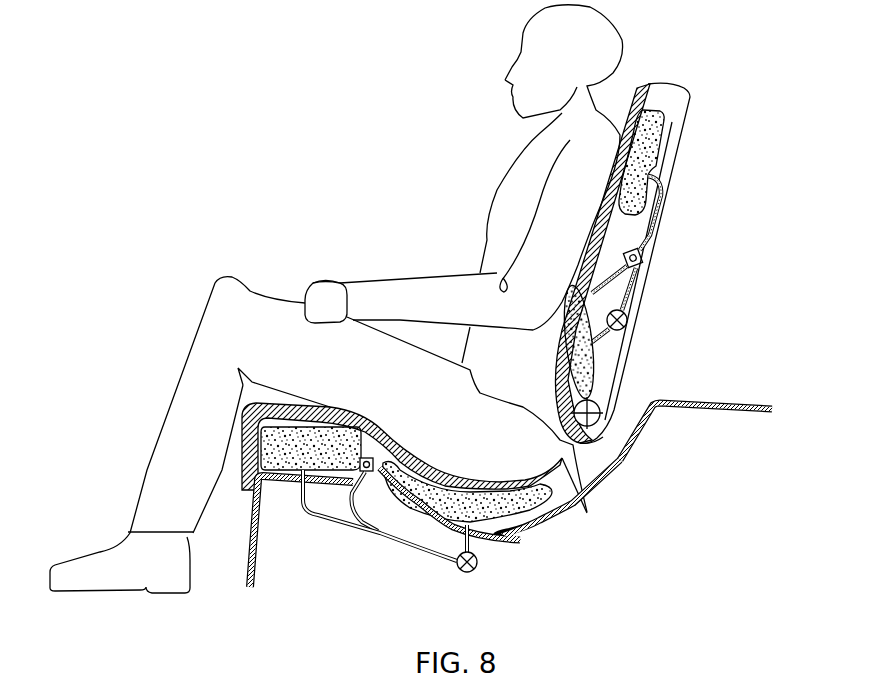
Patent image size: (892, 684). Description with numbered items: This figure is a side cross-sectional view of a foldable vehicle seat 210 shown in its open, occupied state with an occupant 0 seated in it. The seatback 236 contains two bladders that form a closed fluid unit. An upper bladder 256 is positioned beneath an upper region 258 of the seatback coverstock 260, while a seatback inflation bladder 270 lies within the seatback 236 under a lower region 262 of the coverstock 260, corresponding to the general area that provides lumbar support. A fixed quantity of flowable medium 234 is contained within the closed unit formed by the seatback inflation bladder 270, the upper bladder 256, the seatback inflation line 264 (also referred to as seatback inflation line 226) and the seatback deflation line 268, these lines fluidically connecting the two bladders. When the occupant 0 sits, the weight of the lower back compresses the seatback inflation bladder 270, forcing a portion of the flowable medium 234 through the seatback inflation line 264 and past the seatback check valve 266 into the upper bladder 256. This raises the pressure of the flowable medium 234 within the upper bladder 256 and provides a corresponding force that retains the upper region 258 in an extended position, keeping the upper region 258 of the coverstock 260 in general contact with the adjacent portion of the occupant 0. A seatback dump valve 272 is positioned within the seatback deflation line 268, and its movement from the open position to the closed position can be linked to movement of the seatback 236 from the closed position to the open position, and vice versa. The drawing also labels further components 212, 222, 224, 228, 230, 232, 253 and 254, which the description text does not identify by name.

The occupant 0 is at (436, 163).
The vehicle seat 210 is at (746, 161).
The seat cushion bladder 212 is at (562, 505).
The seat frame 222 is at (283, 474).
The seat pan 224 is at (512, 533).
The seatback inflation line 226 is at (360, 478).
The valve 228 is at (359, 466).
The conduit 230 is at (402, 547).
The pump 232 is at (470, 572).
The flowable medium 234 is at (566, 341).
The seatback 236 is at (672, 281).
The pivot 253 is at (600, 423).
The floor rail 254 is at (703, 409).
The upper bladder 256 is at (657, 146).
The upper region 258 is at (623, 107).
The seatback coverstock 260 is at (623, 306).
The lower region 262 is at (544, 369).
The seatback inflation line 264 is at (652, 224).
The seatback check valve 266 is at (639, 253).
The seatback deflation line 268 is at (612, 277).
The seatback inflation bladder 270 is at (592, 353).
The seatback dump valve 272 is at (608, 330).